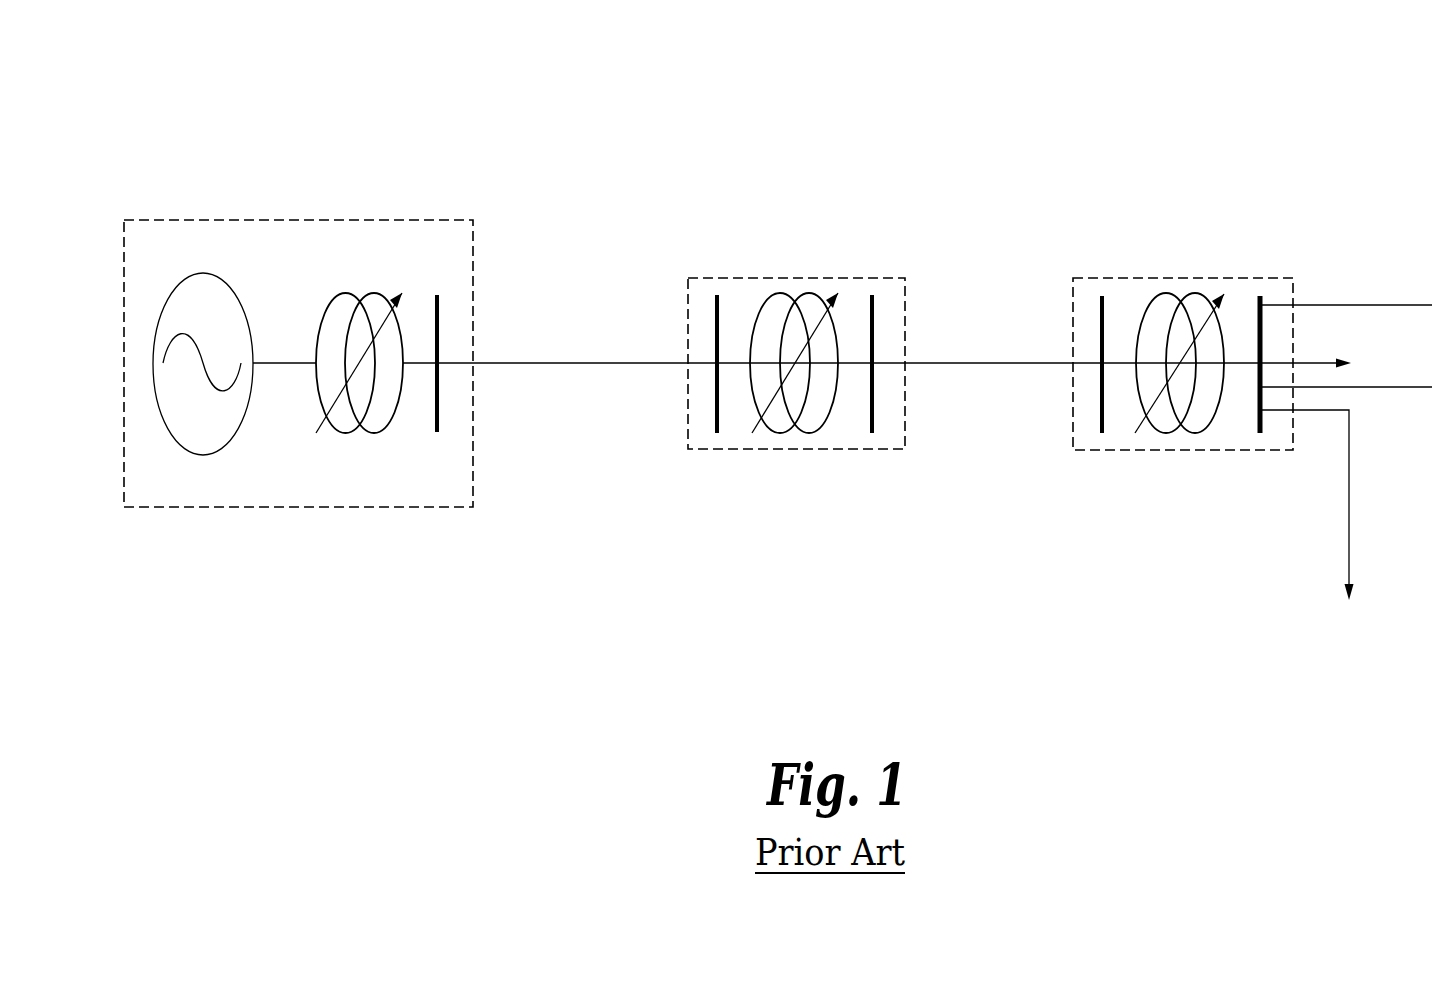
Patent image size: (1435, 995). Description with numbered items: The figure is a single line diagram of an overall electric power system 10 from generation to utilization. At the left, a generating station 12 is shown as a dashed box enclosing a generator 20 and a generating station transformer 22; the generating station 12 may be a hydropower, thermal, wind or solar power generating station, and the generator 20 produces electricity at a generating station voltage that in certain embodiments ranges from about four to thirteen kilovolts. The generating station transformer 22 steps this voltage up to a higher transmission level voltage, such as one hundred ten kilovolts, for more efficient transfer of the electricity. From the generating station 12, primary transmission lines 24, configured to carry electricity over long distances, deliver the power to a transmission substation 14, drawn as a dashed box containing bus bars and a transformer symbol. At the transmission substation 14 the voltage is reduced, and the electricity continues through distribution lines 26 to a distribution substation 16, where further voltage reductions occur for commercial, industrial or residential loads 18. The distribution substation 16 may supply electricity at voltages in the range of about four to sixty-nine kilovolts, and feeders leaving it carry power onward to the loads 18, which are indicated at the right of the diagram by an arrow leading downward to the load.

The electric power system 10 is at (989, 54).
The generating station 12 is at (498, 183).
The transmission substation 14 is at (907, 432).
The distribution substation 16 is at (1209, 278).
The loads 18 is at (1349, 502).
The generator 20 is at (223, 277).
The generating station transformer 22 is at (375, 287).
The primary transmission lines 24 is at (568, 363).
The distribution lines 26 is at (984, 363).